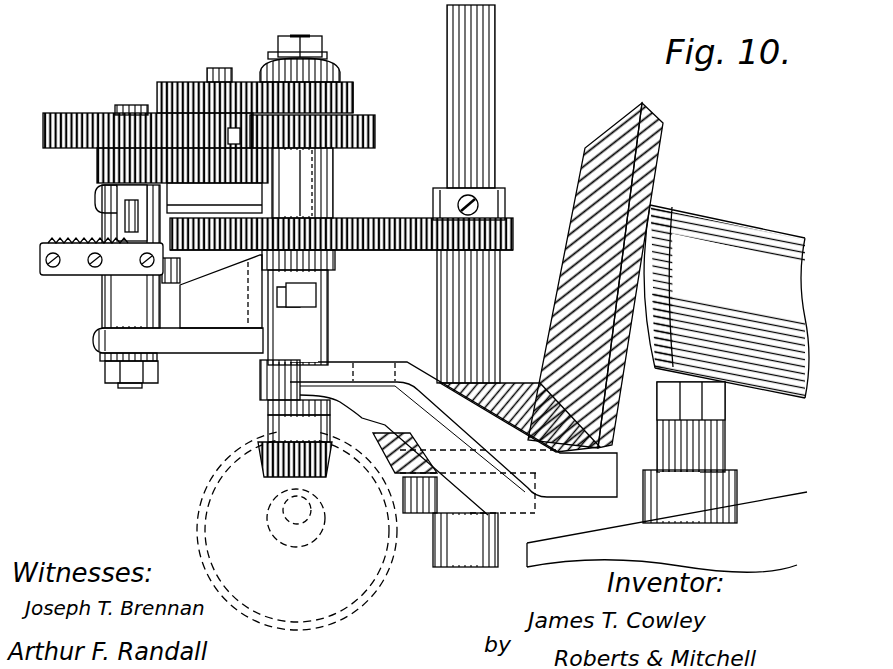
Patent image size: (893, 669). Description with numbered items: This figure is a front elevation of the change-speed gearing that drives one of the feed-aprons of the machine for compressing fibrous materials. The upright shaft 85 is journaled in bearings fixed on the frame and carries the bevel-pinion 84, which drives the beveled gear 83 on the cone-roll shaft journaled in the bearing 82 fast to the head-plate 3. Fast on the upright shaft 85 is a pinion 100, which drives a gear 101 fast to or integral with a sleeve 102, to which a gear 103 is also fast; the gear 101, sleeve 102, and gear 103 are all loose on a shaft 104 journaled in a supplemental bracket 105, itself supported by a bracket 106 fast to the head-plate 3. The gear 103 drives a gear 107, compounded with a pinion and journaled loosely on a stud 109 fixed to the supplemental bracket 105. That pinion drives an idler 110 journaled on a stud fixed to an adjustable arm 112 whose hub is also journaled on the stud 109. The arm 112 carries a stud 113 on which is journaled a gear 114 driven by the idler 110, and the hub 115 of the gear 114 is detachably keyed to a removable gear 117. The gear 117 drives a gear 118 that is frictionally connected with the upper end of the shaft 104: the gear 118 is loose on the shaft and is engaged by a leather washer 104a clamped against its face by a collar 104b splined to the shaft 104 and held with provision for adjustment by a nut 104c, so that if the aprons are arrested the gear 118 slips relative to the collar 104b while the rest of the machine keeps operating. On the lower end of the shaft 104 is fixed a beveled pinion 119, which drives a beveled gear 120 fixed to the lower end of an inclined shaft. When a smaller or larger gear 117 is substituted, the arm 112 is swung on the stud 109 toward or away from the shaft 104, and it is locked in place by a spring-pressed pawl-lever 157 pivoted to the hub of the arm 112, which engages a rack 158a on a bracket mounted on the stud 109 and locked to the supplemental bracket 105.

The head-plate 3 is at (667, 532).
The bearing 82 is at (726, 301).
The beveled gear 83 is at (665, 145).
The bevel-pinion 84 is at (445, 378).
The upright shaft 85 is at (477, 52).
The pinion 100 is at (510, 223).
The gear 101 is at (382, 220).
The sleeve 102 is at (326, 188).
The gear 103 is at (378, 128).
The shaft 104 is at (296, 36).
The washer 104a is at (260, 77).
The collar 104b is at (337, 45).
The nut 104c is at (282, 45).
The supplemental bracket 105 is at (178, 304).
The bracket 106 is at (430, 481).
The gear 107 is at (50, 115).
The stud 109 is at (125, 105).
The idler 110 is at (100, 162).
The adjustable arm 112 is at (93, 198).
The stud 113 is at (210, 72).
The gear 114 is at (300, 165).
The hub 115 is at (233, 133).
The removable gear 117 is at (160, 80).
The gear 118 is at (347, 85).
The beveled pinion 119 is at (258, 448).
The beveled gear 120 is at (390, 572).
The spring-pressed pawl-lever 157 is at (123, 238).
The rack 158a is at (75, 243).